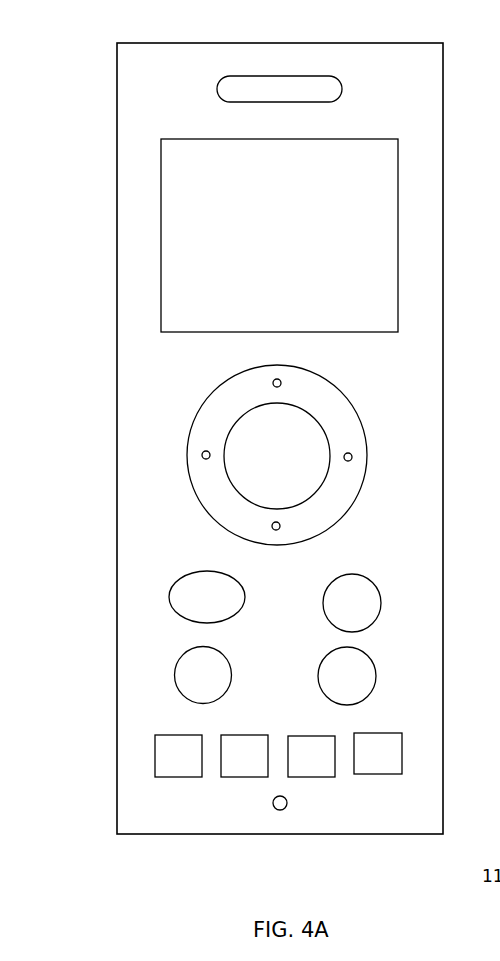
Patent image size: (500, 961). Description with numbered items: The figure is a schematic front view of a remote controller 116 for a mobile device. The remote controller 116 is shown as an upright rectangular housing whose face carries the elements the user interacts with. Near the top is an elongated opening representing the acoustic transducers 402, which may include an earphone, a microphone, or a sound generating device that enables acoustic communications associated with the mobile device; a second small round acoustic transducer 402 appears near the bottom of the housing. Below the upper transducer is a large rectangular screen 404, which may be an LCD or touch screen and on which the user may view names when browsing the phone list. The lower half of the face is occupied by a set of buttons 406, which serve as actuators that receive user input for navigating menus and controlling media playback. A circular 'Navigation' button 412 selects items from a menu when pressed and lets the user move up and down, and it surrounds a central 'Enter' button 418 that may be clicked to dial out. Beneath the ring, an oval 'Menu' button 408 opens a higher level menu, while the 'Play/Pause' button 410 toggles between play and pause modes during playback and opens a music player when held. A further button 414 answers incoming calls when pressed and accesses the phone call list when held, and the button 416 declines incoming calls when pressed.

The remote controller 116 is at (117, 72).
The acoustic transducers 402 is at (278, 77).
The screen 404 is at (161, 235).
The buttons 406 is at (67, 737).
The 'Menu' button 408 is at (168, 597).
The 'Play/Pause' button 410 is at (381, 599).
The 'Navigation' button 412 is at (193, 454).
The call answer button 414 is at (175, 675).
The call decline button 416 is at (377, 673).
The 'Enter' button 418 is at (308, 463).